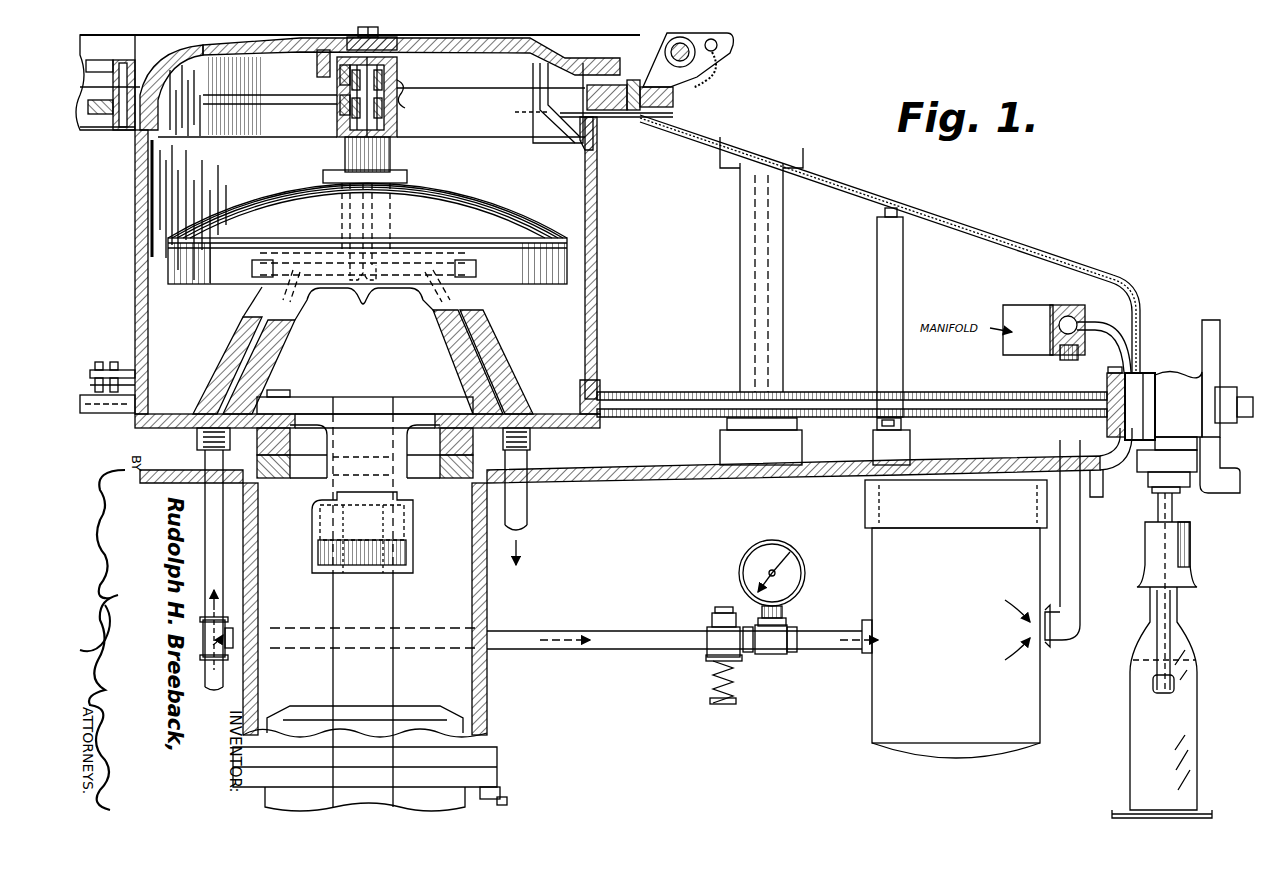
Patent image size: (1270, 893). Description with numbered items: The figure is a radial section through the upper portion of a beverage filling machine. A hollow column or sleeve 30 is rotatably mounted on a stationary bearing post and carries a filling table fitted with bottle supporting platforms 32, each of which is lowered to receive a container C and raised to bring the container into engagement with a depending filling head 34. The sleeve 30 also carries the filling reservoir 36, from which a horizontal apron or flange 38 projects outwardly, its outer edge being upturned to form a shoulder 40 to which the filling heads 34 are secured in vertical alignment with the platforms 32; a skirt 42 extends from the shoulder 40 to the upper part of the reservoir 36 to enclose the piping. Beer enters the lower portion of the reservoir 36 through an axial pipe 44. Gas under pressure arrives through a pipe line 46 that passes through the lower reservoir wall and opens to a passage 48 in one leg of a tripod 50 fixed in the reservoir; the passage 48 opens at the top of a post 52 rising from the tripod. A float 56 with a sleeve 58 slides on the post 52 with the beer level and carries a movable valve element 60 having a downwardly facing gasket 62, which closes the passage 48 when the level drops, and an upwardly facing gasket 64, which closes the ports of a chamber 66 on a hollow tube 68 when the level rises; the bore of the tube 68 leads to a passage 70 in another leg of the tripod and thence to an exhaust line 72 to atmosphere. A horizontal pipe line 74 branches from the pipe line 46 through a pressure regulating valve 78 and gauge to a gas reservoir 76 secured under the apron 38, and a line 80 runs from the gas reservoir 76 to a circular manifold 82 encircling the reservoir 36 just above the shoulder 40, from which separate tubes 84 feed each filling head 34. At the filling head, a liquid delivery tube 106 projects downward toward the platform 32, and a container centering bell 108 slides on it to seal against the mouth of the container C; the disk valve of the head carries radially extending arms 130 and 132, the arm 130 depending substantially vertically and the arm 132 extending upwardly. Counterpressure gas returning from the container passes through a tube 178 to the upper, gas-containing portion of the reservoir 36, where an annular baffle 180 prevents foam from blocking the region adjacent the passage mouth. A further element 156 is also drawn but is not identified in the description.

The hollow column or sleeve 30 is at (487, 720).
The bottle supporting platforms 32 is at (1112, 810).
The filling head 34 is at (1170, 375).
The filling reservoir 36 is at (597, 290).
The apron or flange 38 is at (650, 480).
The shoulder 40 is at (1107, 430).
The skirt 42 is at (880, 183).
The pipe 44 is at (393, 608).
The pipe line 46 is at (210, 462).
The passage 48 is at (277, 357).
The tripod 50 is at (297, 318).
The post 52 is at (390, 205).
The float 56 is at (505, 228).
The sleeve 58 is at (400, 152).
The movable valve element 60 is at (397, 85).
The downwardly facing gasket 62 is at (340, 102).
The upwardly facing gasket 64 is at (340, 78).
The chamber 66 is at (337, 57).
The hollow tube 68 is at (400, 105).
The passage 70 is at (372, 225).
The exhaust line 72 is at (520, 508).
The horizontal pipe line 74 is at (600, 628).
The gas reservoir 76 is at (879, 713).
The pressure regulating valve 78 is at (712, 648).
The line 80 is at (1080, 575).
The circular manifold 82 is at (1050, 345).
The tubes 84 is at (1115, 333).
The liquid delivery tube 106 is at (1156, 508).
The container centering bell 108 is at (1192, 558).
The arm 130 is at (1222, 493).
The arm 132 is at (1215, 325).
The pipe 156 is at (835, 392).
The tube 178 is at (960, 225).
The annular baffle 180 is at (560, 108).
The container C is at (1150, 680).